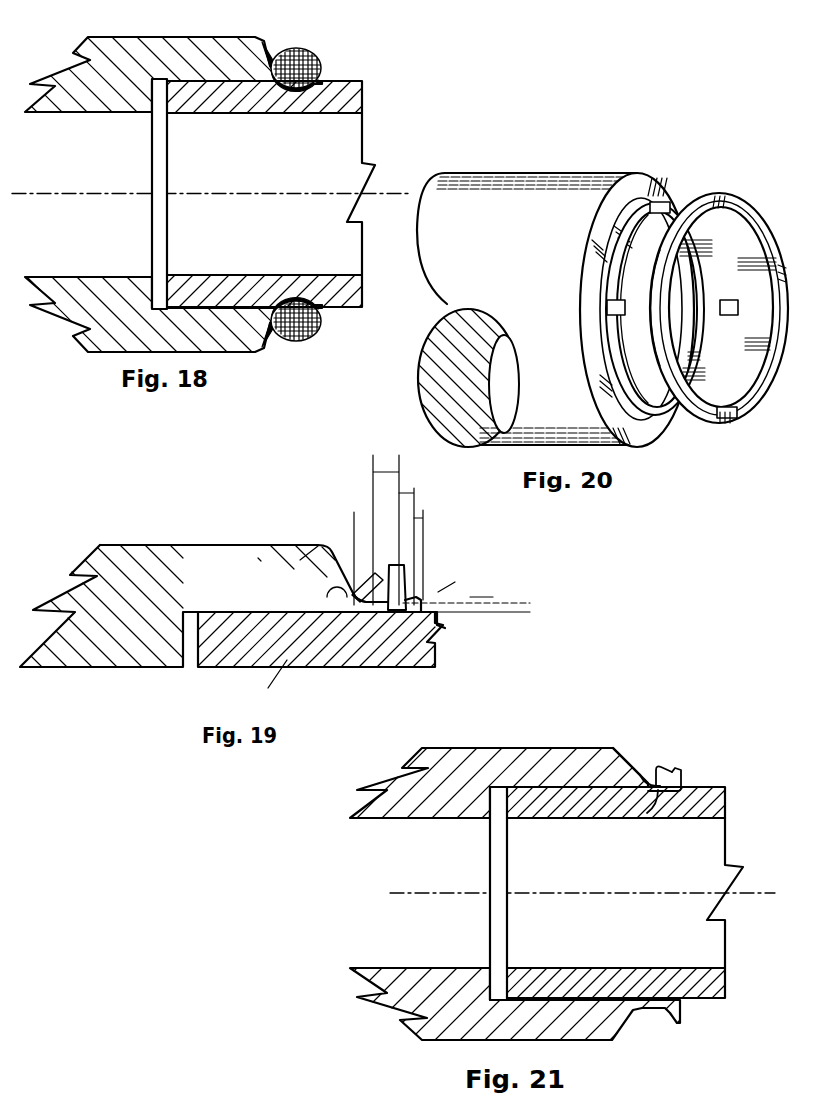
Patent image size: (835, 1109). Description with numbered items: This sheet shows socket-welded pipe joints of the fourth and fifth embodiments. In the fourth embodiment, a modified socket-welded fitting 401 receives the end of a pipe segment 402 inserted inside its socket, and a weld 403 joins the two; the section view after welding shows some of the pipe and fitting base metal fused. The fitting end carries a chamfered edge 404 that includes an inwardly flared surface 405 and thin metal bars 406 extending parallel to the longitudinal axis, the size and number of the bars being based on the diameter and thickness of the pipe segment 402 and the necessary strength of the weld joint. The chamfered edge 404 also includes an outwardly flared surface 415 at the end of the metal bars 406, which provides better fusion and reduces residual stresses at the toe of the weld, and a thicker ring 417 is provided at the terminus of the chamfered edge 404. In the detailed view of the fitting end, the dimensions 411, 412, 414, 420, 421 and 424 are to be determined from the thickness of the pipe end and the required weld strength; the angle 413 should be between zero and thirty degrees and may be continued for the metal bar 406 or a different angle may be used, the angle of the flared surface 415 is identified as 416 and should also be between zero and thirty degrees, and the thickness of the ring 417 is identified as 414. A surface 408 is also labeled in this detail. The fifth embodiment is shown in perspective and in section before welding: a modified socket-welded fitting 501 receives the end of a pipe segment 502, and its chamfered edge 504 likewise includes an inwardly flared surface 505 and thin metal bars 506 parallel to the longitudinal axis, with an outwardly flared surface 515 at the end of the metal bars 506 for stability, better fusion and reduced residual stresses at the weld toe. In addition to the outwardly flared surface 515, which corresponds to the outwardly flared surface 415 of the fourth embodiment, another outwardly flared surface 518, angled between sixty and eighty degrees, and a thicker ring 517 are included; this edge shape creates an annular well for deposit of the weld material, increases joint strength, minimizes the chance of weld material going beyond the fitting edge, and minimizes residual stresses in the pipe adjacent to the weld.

In FIG. 18, the modified socket-welded fitting 401 is at (157, 36).
In FIG. 19, the modified socket-welded fitting 401 is at (113, 553).
In FIG. 18, the pipe segment 402 is at (357, 100).
In FIG. 19, the pipe segment 402 is at (230, 668).
In FIG. 18, the weld 403 is at (302, 55).
In FIG. 18, the chamfered edge 404 is at (272, 37).
In FIG. 19, the chamfered edge 404 is at (337, 551).
In FIG. 19, the inwardly flared surface 405 is at (264, 682).
In FIG. 19, the thin metal bars 406 is at (378, 607).
In FIG. 19, the sealing surface 408 is at (325, 577).
In FIG. 19, the dimension 411 is at (350, 525).
In FIG. 19, the dimension 412 is at (515, 596).
In FIG. 19, the angle 413 is at (291, 595).
In FIG. 19, the thickness of ring 414 is at (482, 618).
In FIG. 19, the outwardly flared surface 415 is at (387, 612).
In FIG. 19, the angle of the flared surface 416 is at (452, 595).
In FIG. 19, the thicker ring 417 is at (412, 615).
In FIG. 19, the dimension 420 is at (402, 472).
In FIG. 19, the dimension 421 is at (417, 493).
In FIG. 19, the dimension 424 is at (426, 518).
In FIG. 20, the modified socket-welded fitting 501 is at (440, 203).
In FIG. 21, the modified socket-welded fitting 501 is at (435, 762).
In FIG. 21, the pipe segment 502 is at (708, 802).
In FIG. 20, the chamfered edge 504 is at (690, 150).
In FIG. 21, the chamfered edge 504 is at (619, 746).
In FIG. 21, the inwardly flared surface 505 is at (640, 770).
In FIG. 20, the thin metal bars 506 is at (611, 311).
In FIG. 21, the thin metal bars 506 is at (647, 813).
In FIG. 21, the outwardly flared surface 515 is at (658, 770).
In FIG. 20, the thicker ring 517 is at (740, 208).
In FIG. 21, the thicker ring 517 is at (683, 782).
In FIG. 21, the outwardly flared surface 518 is at (658, 767).